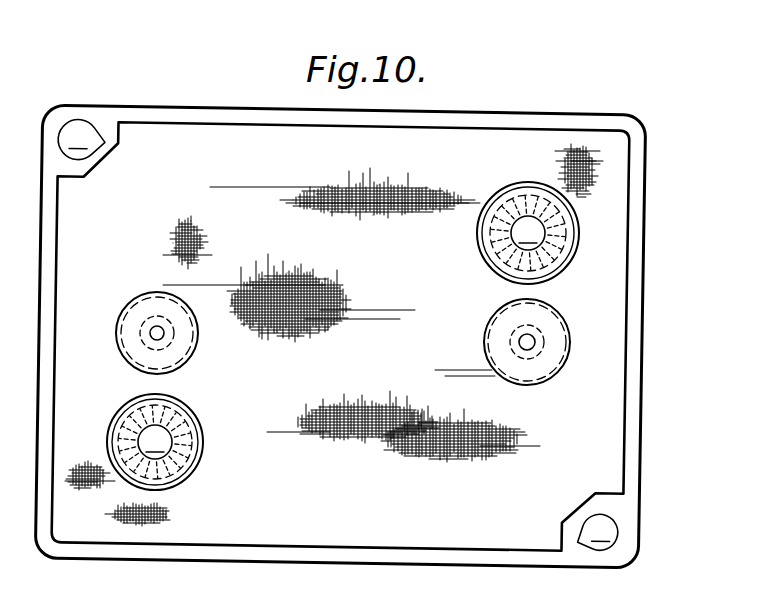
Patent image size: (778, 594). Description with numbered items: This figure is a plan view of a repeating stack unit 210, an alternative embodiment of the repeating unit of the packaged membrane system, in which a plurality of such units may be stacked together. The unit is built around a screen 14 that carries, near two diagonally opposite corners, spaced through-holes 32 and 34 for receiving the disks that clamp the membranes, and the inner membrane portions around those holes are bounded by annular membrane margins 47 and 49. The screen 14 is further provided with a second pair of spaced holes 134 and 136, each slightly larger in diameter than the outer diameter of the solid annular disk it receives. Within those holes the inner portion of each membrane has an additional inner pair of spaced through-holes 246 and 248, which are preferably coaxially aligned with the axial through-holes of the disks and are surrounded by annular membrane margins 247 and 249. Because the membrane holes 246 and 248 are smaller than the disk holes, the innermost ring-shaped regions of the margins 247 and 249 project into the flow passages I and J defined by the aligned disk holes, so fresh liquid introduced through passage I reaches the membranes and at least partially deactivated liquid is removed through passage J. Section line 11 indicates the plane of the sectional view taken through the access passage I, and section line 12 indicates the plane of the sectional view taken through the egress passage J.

The section line 11- 11 is at (217, 290).
The section line 12-12 / panel edge 12 is at (595, 290).
The screen 14 is at (366, 394).
The through-hole 32 is at (187, 458).
The through-hole 34 is at (560, 243).
The annular membrane margin 47 is at (120, 440).
The annular membrane margin 49 is at (530, 195).
The hole 134 is at (140, 375).
The hole 136 is at (537, 386).
The repeating stack unit 210 is at (652, 397).
The inner through-hole 246 is at (158, 338).
The annular membrane margin 247 is at (128, 352).
The inner through-hole 248 is at (529, 350).
The annular membrane margin 249 is at (553, 358).